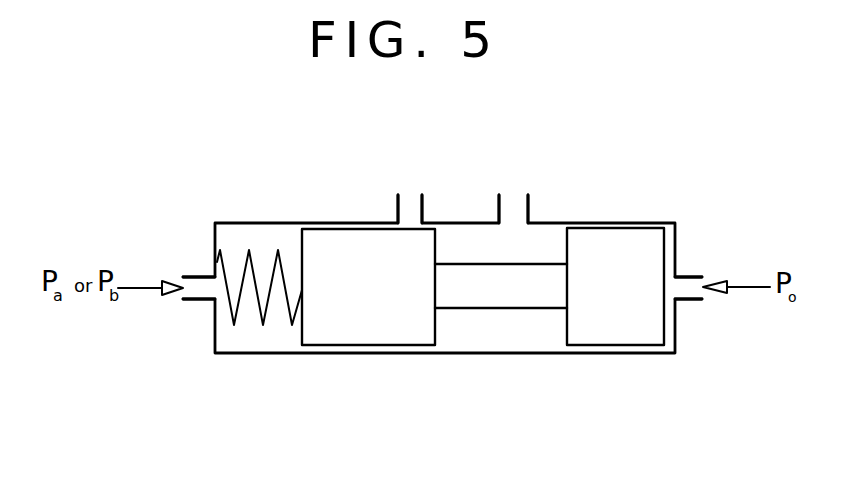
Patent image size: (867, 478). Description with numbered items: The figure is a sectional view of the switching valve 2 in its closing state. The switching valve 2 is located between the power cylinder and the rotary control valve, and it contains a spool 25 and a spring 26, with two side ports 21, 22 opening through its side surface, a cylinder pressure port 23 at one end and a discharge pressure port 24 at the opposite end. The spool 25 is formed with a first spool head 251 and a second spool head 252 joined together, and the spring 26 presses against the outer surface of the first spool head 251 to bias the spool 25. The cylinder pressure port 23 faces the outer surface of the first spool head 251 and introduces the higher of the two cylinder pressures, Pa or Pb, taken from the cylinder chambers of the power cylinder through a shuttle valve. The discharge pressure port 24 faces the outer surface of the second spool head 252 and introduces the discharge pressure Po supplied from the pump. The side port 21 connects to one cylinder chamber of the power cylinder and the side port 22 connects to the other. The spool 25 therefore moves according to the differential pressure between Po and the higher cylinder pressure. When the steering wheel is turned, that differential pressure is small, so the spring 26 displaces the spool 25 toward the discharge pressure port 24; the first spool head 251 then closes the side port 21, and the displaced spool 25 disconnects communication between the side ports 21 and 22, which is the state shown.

The switching valve 2 is at (580, 182).
The side port 21 is at (400, 207).
The side port 22 is at (528, 199).
The cylinder pressure port 23 is at (188, 297).
The discharge pressure port 24 is at (698, 292).
The spool 25 is at (513, 313).
The first spool head 251 is at (367, 327).
The second spool head 252 is at (620, 323).
The spring 26 is at (265, 327).